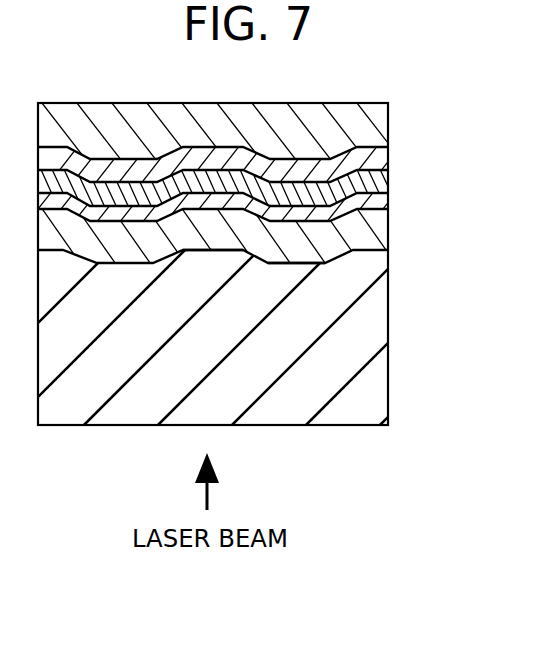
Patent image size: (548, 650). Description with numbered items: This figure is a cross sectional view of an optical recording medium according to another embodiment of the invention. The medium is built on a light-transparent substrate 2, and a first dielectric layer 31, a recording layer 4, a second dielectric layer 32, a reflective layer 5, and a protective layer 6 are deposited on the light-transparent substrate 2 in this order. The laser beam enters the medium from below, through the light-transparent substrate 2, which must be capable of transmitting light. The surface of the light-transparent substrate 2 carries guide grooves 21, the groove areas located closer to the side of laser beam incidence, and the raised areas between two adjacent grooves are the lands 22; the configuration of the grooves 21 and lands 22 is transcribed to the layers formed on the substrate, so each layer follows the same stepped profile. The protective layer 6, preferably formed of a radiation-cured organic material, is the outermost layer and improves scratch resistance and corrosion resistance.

The light-transparent substrate 2 is at (380, 333).
The guide grooves 21 is at (288, 265).
The lands 22 is at (213, 255).
The first dielectric layer 31 is at (388, 235).
The second dielectric layer 32 is at (388, 178).
The recording layer 4 is at (388, 203).
The reflective layer 5 is at (388, 162).
The protective layer 6 is at (388, 128).